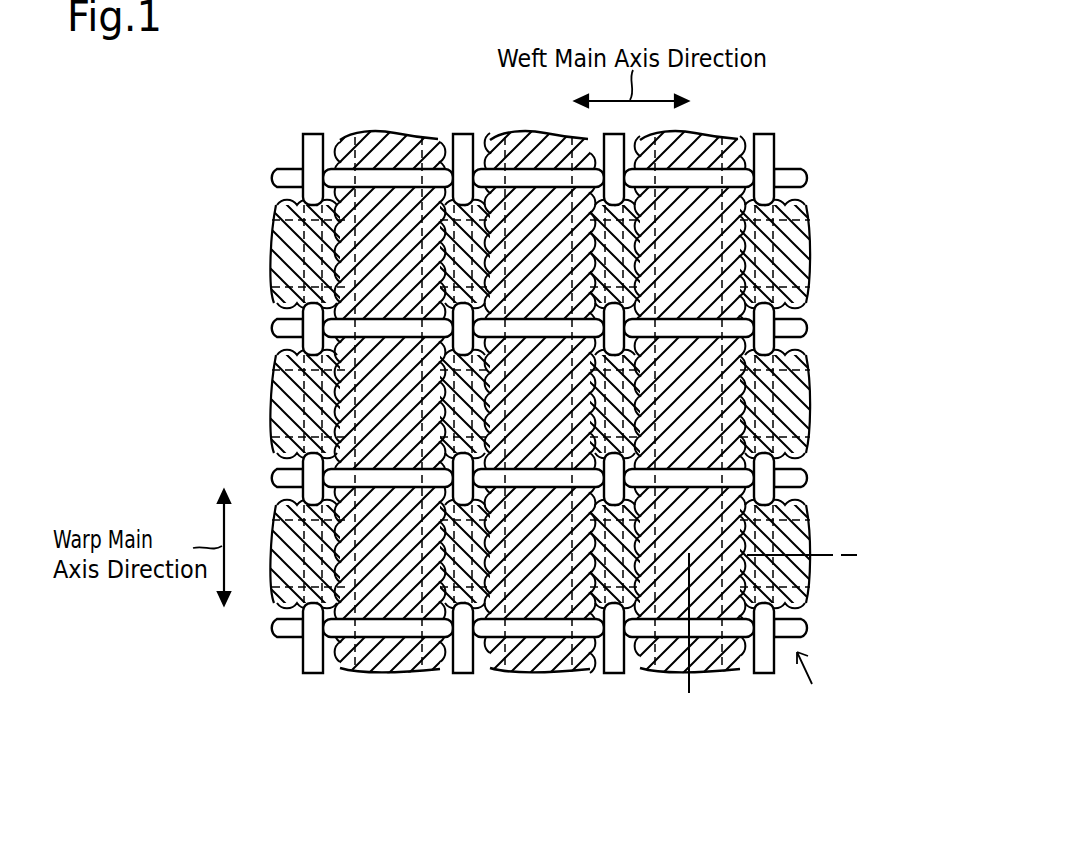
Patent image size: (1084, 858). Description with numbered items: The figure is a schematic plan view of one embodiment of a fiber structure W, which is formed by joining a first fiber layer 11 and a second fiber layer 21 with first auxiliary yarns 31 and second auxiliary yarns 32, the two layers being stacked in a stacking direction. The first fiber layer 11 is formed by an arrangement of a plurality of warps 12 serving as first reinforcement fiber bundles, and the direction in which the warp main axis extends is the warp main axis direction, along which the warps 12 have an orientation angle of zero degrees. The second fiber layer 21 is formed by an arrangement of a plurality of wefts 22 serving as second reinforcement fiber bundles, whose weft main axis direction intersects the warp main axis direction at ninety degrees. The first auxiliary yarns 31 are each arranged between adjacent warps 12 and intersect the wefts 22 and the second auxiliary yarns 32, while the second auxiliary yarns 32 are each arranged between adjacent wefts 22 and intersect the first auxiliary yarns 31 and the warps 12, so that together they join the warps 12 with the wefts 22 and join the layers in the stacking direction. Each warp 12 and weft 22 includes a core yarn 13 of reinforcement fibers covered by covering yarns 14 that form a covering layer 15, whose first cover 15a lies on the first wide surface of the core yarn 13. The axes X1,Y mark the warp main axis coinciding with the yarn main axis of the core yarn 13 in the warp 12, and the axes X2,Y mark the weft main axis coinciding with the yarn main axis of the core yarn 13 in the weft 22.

The first fiber layer 11 is at (576, 412).
The warp 12 is at (387, 672).
The core yarn 13 is at (803, 607).
The covering yarn 14 is at (367, 672).
The covering layer 15 is at (343, 663).
The first cover 15a is at (417, 672).
The second fiber layer 21 is at (836, 411).
The weft 22 is at (812, 250).
The first auxiliary yarn 31 is at (464, 150).
The second auxiliary yarn 32 is at (367, 180).
The fiber structure W is at (814, 679).
The warp main axis and yarn main axis X1,Y is at (698, 700).
The weft main axis and yarn main axis X2,Y is at (855, 557).